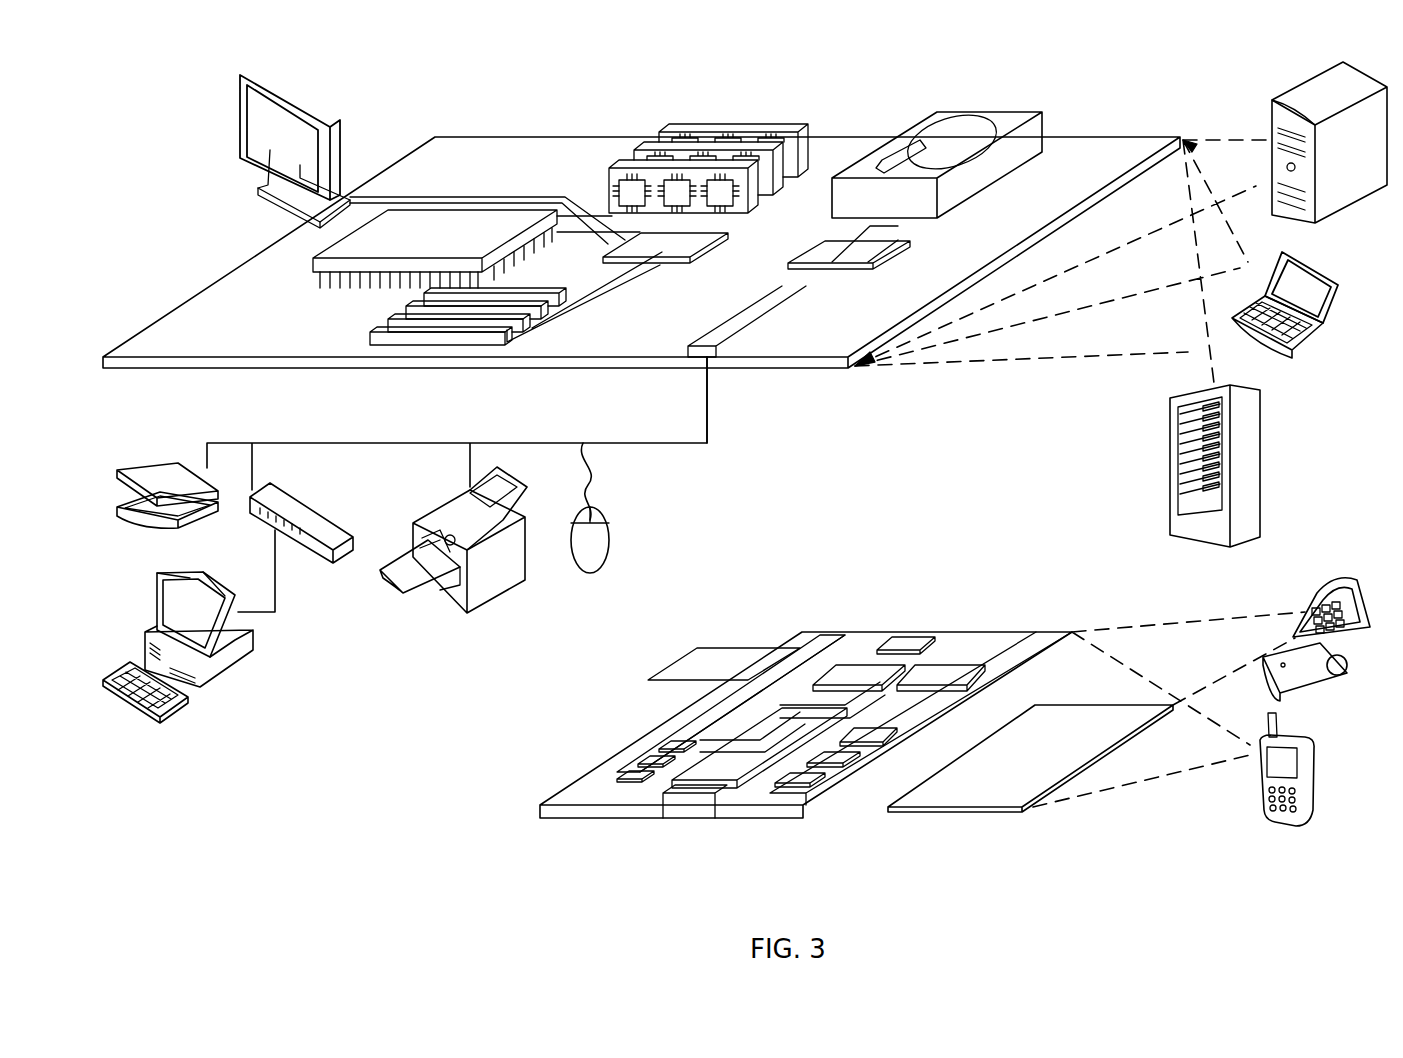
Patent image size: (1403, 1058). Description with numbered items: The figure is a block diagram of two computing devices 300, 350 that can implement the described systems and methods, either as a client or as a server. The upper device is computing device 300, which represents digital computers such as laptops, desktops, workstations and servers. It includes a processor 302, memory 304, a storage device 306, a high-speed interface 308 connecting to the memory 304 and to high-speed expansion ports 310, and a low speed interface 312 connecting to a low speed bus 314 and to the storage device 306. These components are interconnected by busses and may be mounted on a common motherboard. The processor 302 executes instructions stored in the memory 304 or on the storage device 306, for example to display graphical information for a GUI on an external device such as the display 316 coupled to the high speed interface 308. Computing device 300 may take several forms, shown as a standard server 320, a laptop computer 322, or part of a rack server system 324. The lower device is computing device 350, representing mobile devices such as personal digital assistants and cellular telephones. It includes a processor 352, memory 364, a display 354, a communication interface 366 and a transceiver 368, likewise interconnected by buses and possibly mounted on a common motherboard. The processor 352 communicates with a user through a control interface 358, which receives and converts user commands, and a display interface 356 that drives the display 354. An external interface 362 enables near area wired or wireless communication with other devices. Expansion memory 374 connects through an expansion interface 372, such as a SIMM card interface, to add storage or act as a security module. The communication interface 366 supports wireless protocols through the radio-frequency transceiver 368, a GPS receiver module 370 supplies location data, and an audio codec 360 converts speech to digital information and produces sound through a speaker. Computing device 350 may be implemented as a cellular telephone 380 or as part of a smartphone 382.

The computing device 300 is at (450, 108).
The processor 302 is at (325, 262).
The memory 304 is at (660, 168).
The storage device 306 is at (920, 135).
The high-speed interface 308 is at (615, 252).
The high-speed expansion ports 310 is at (380, 335).
The low speed interface 312 is at (830, 252).
The low speed bus 314 is at (730, 360).
The display 316 is at (245, 82).
The standard server 320 is at (1272, 118).
The laptop computer 322 is at (1336, 280).
The rack server system 324 is at (1172, 490).
The computing device 350 is at (518, 818).
The processor 352 is at (742, 770).
The display 354 is at (985, 795).
The display interface 356 is at (808, 790).
The control interface 358 is at (835, 770).
The audio codec 360 is at (868, 748).
The external interface 362 is at (708, 800).
The memory 364 is at (635, 772).
The communication interface 366 is at (868, 682).
The transceiver 368 is at (940, 678).
The GPS receiver module 370 is at (910, 645).
The expansion interface 372 is at (785, 648).
The expansion memory 374 is at (705, 668).
The cellular telephone 380 is at (1322, 592).
The smartphone 382 is at (1258, 780).